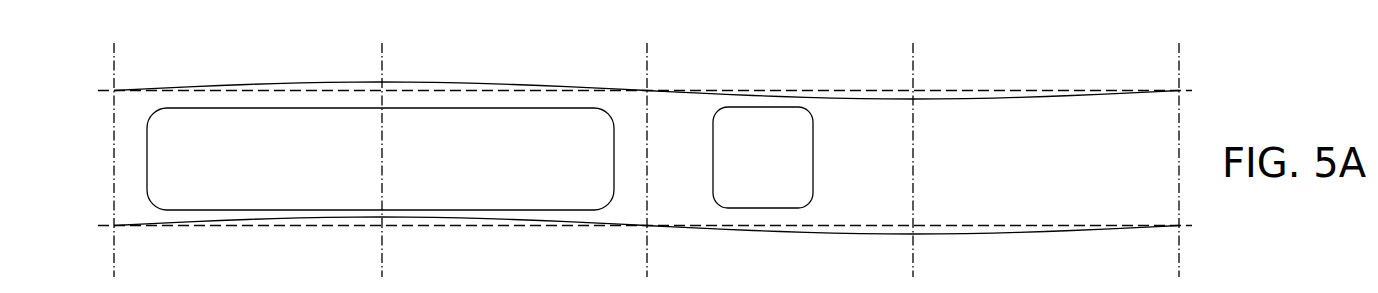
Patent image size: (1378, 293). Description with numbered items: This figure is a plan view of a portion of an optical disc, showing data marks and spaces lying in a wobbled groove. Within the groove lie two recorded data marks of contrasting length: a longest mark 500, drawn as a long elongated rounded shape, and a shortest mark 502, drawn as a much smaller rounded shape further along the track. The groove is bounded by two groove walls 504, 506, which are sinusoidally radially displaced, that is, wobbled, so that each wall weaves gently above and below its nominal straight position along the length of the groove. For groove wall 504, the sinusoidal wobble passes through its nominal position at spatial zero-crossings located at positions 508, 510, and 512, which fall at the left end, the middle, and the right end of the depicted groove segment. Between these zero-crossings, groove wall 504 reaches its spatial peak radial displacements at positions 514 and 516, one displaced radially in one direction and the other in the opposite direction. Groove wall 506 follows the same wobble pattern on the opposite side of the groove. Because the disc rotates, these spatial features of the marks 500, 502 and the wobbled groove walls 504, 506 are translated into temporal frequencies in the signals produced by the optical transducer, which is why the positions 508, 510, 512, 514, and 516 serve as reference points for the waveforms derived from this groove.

The longest mark 500 is at (236, 210).
The shortest mark 502 is at (746, 208).
The groove wall 504 is at (1012, 98).
The groove wall 506 is at (1012, 233).
The spatial zero-crossing position 508 is at (114, 91).
The spatial zero-crossing position 510 is at (648, 91).
The spatial zero-crossing position 512 is at (1179, 91).
The spatial peak radial displacement position 514 is at (383, 83).
The spatial peak radial displacement position 516 is at (918, 100).